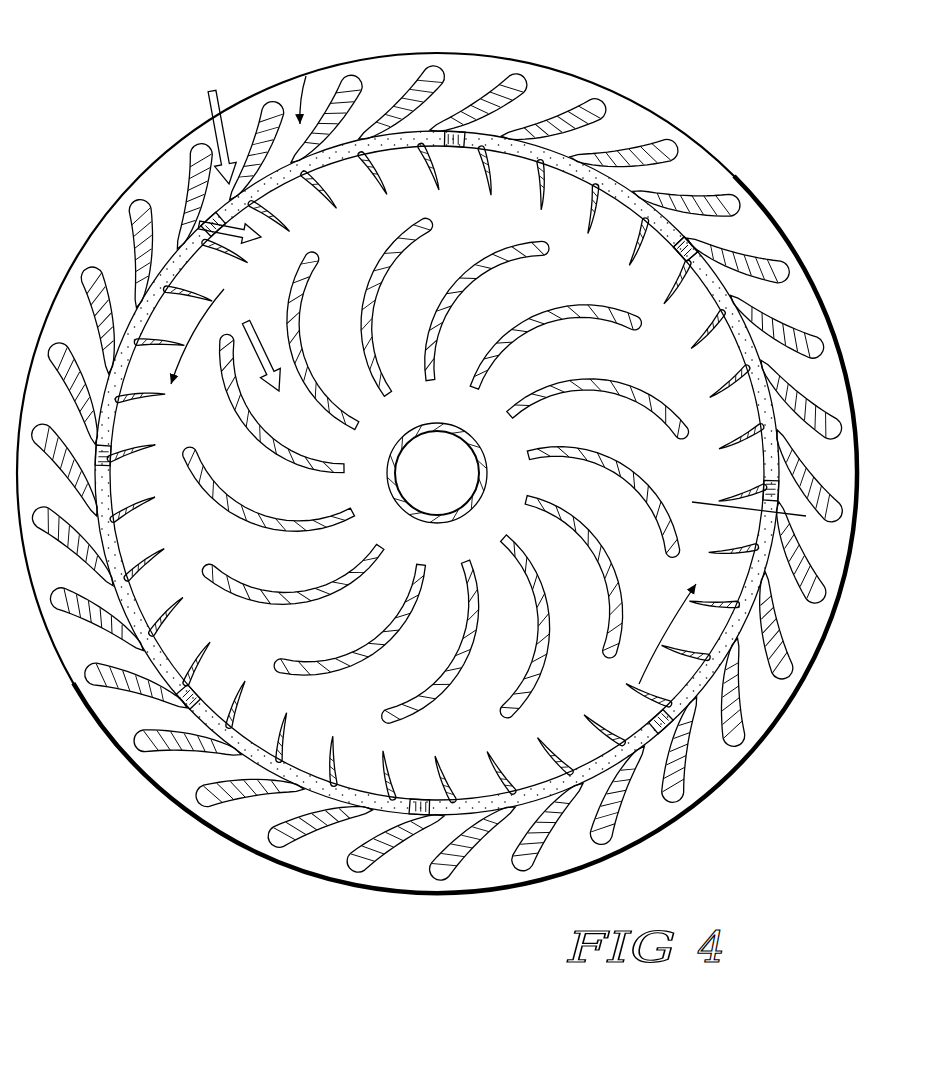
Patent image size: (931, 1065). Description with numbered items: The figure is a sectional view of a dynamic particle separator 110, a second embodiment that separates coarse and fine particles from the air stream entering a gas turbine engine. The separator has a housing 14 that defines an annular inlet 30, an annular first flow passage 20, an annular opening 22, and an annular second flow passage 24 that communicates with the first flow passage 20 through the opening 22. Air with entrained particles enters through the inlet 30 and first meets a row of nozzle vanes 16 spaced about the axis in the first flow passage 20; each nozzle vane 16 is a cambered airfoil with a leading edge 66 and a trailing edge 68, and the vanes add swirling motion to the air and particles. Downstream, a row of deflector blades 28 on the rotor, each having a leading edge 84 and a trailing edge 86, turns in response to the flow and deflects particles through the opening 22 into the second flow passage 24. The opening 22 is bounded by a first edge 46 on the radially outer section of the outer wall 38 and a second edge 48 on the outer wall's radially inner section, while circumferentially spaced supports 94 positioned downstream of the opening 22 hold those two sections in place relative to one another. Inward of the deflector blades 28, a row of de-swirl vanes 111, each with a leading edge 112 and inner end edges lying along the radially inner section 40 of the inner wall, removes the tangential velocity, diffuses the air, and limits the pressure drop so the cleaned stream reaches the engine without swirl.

The dynamic particle separator 110 is at (432, 345).
The annular inlet 30 is at (437, 449).
The housing 14 is at (437, 446).
The leading edge 66 is at (253, 125).
The trailing edge 68 is at (328, 117).
The nozzle vane 16 is at (497, 103).
The outer wall 38 is at (465, 483).
The second flow passage 24 is at (437, 473).
The annular opening 22 is at (437, 473).
The support 94 is at (437, 473).
The first edge 46 is at (498, 171).
The second edge 48 is at (550, 189).
The first flow passage 20 is at (280, 217).
The leading edge 112 is at (368, 321).
The de-swirl vane 111 is at (439, 475).
The deflector blade 28 is at (234, 264).
The radially inner section 40 is at (454, 471).
The leading edge 84 is at (665, 269).
The trailing edge 86 is at (675, 305).